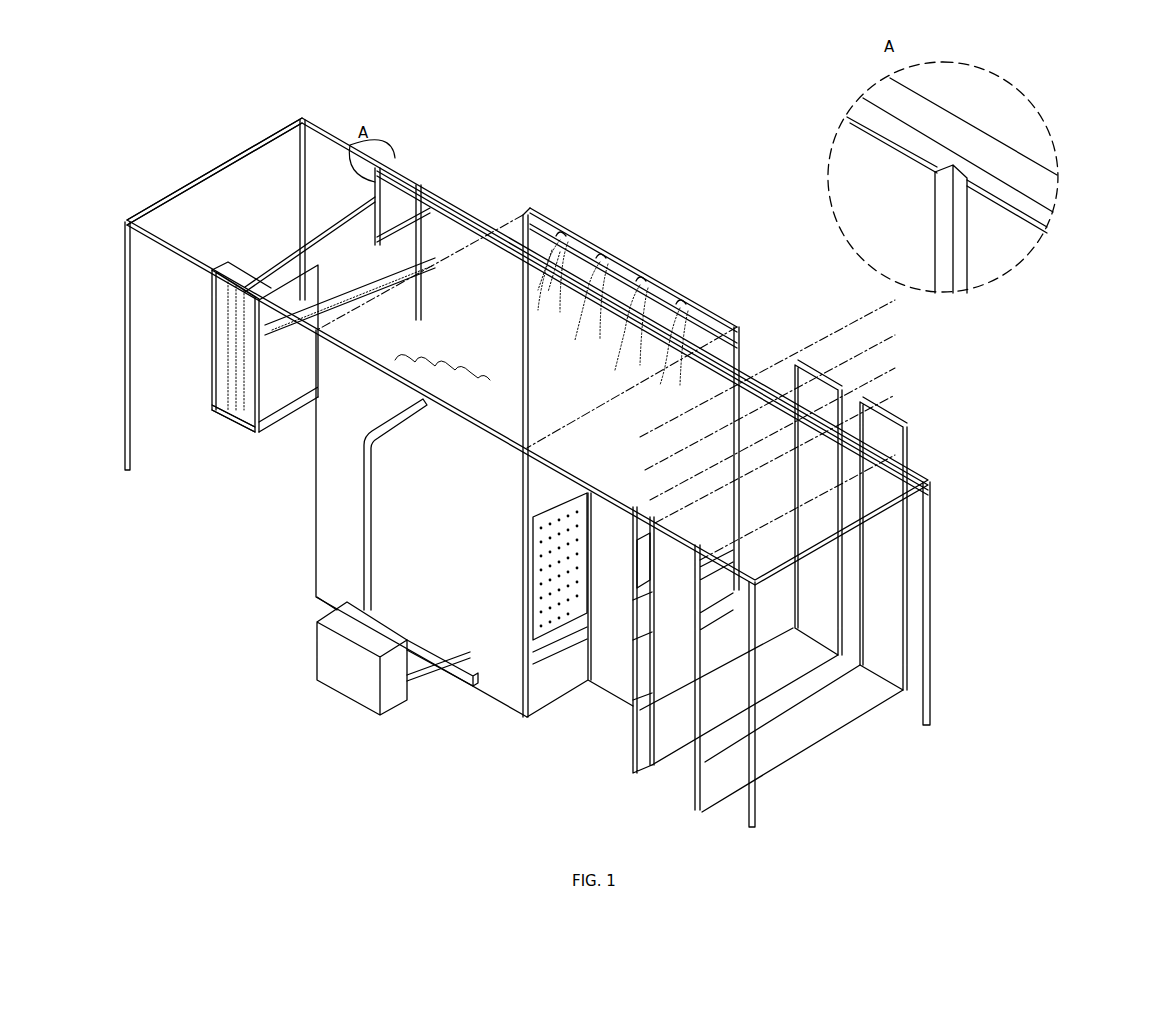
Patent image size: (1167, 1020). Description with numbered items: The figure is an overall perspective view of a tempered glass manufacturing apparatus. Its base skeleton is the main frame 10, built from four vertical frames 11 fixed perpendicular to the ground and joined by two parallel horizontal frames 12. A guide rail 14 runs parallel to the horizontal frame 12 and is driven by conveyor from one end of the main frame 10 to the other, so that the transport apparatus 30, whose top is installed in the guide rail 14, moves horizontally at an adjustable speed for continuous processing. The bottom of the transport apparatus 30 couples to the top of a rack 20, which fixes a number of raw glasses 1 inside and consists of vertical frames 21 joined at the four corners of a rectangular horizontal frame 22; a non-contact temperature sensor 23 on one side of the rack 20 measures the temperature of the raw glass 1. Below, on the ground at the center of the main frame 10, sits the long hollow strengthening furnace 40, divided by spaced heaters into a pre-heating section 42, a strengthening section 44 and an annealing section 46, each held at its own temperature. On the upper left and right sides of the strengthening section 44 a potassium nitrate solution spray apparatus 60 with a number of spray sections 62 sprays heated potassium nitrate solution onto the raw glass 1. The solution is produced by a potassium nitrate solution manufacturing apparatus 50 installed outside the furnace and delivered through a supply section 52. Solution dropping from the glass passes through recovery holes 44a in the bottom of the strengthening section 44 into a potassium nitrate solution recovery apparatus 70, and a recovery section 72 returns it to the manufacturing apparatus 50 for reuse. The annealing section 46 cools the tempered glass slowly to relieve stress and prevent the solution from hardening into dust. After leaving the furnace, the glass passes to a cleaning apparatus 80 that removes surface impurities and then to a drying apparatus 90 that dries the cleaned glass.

The raw glass 1 is at (225, 378).
The main frame 10 is at (400, 178).
The vertical frame 11 is at (124, 270).
The horizontal frame 12 is at (237, 150).
The guide rail 14 is at (385, 165).
The rack 20 is at (252, 462).
The vertical frame 21 is at (246, 428).
The horizontal frame 22 is at (225, 420).
The temperature sensor 23 is at (215, 410).
The transport apparatus 30 is at (470, 228).
The strengthening furnace 40 is at (700, 300).
The pre-heating section 42 is at (541, 238).
The strengthening section 44 is at (650, 290).
The recovery hole 44a is at (572, 518).
The annealing section 46 is at (740, 340).
The potassium nitrate solution manufacturing apparatus 50 is at (318, 645).
The supply section 52 is at (362, 543).
The potassium nitrate solution spray apparatus 60 is at (620, 285).
The spray section 62 is at (585, 252).
The potassium nitrate solution recovery apparatus 70 is at (455, 678).
The recovery section 72 is at (432, 682).
The cleaning apparatus 80 is at (605, 718).
The drying apparatus 90 is at (668, 766).